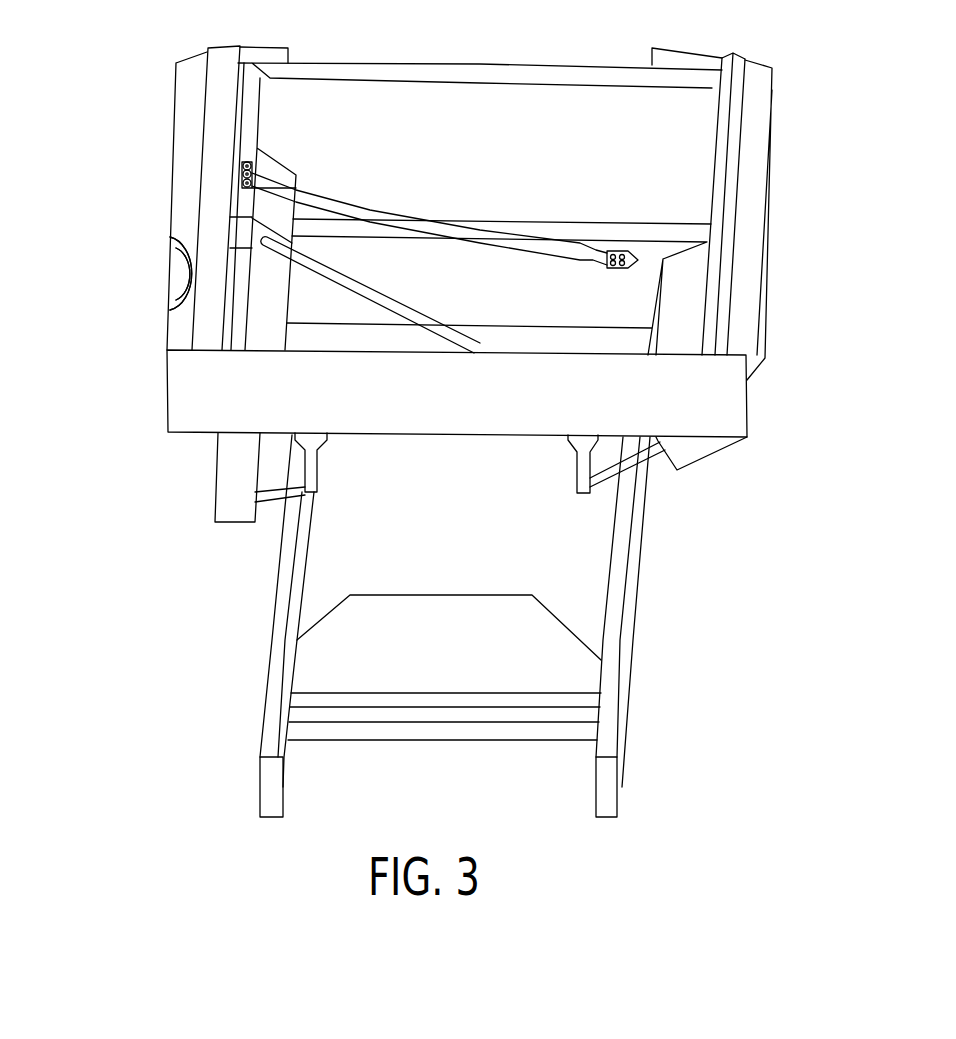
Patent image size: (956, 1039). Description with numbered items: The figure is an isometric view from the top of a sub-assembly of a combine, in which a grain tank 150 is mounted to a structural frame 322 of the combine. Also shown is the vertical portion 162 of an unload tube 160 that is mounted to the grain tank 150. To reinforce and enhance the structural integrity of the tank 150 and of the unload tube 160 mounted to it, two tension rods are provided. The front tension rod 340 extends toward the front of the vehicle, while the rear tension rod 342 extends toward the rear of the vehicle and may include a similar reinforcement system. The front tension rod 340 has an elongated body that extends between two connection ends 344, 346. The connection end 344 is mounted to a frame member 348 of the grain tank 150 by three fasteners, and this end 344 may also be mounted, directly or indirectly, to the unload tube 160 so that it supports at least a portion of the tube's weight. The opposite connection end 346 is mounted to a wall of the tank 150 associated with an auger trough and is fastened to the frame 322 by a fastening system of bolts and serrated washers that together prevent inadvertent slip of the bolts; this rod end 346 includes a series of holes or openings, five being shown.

The grain tank 150 is at (750, 172).
The unload tube 160 is at (183, 275).
The vertical portion 162 is at (183, 275).
The structural frame 322 is at (633, 618).
The front tension rod 340 is at (370, 212).
The rear tension rod 342 is at (382, 293).
The connection end 344 is at (242, 168).
The connection end 346 is at (620, 252).
The frame member 348 is at (250, 142).